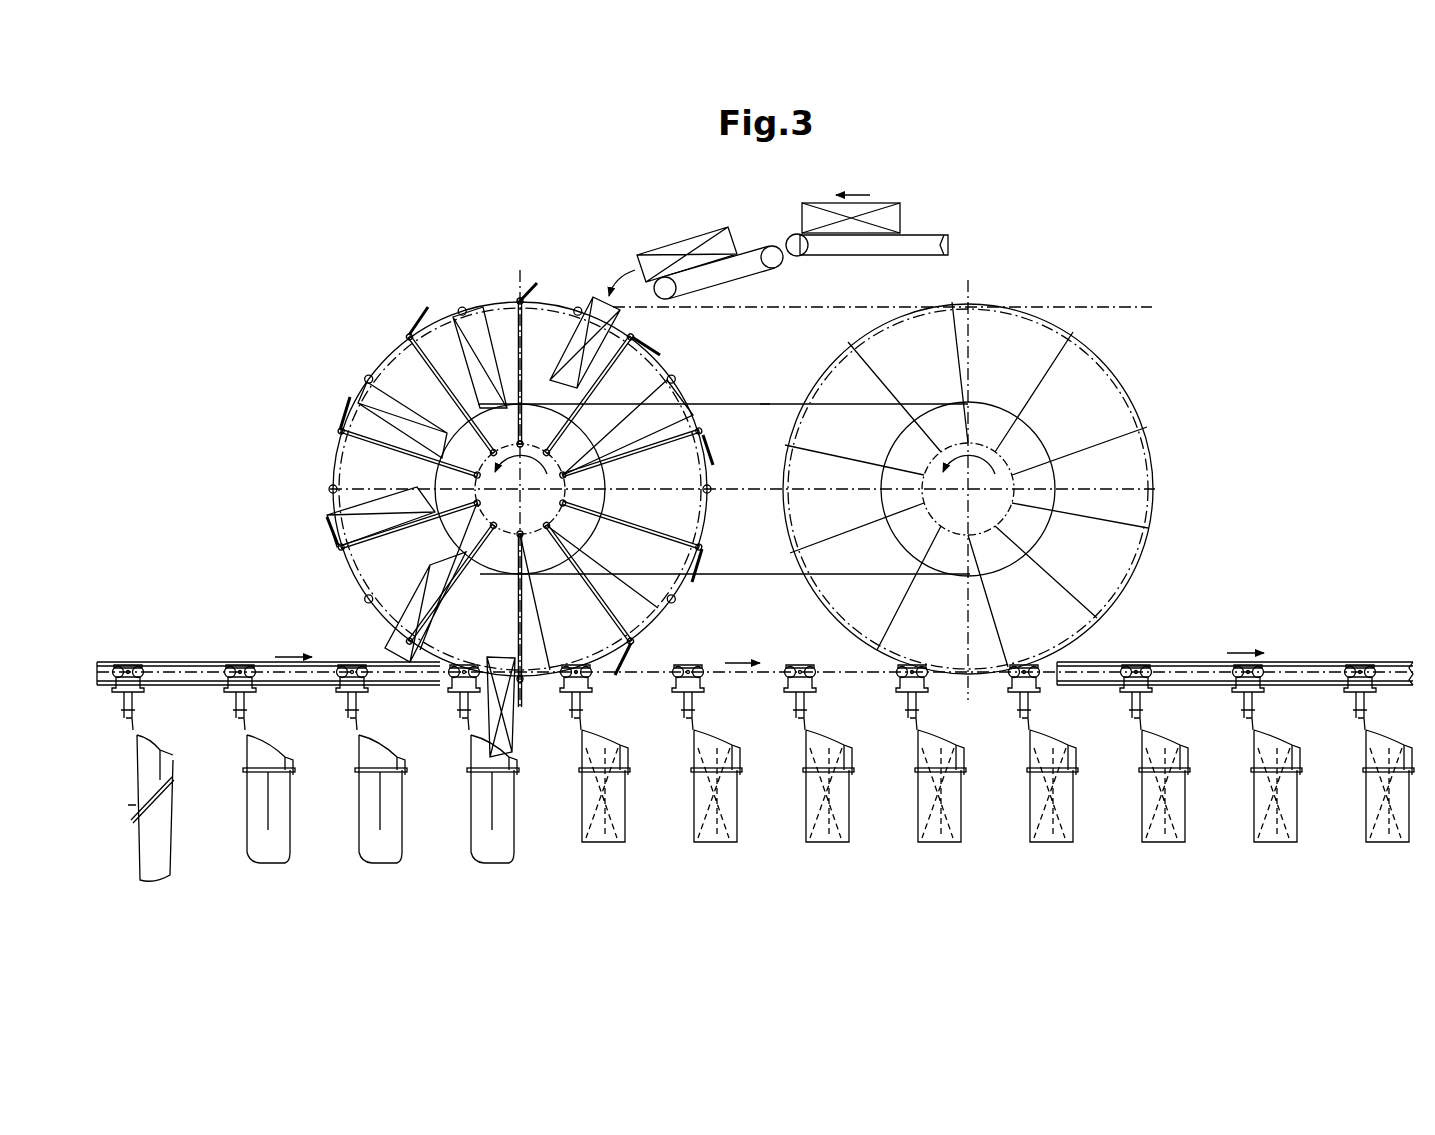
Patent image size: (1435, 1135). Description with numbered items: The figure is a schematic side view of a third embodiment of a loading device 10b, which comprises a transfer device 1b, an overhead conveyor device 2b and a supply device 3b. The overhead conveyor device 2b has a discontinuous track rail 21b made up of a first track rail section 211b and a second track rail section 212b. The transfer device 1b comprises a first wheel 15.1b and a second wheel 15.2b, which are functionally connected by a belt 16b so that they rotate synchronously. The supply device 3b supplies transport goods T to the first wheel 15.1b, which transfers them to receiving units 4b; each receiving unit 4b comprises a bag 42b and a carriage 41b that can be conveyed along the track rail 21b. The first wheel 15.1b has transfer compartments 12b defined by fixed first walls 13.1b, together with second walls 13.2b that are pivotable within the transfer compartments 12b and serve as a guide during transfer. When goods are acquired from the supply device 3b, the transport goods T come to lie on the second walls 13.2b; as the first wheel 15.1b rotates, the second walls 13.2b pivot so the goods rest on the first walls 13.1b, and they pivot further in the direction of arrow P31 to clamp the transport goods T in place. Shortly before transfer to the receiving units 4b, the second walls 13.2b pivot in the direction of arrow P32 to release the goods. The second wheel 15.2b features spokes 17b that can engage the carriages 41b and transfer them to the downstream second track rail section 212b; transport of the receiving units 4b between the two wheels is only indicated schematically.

The transfer device 1b is at (360, 267).
The overhead conveyor device 2b is at (182, 571).
The supply device 3b is at (899, 181).
The receiving unit 4b is at (121, 773).
The loading device 10b is at (1169, 298).
The transfer compartment 12b is at (662, 561).
The first wall 13.1b is at (665, 445).
The second wall 13.2b is at (661, 431).
The first wheel 15.1b is at (366, 329).
The second wheel 15.2b is at (1165, 372).
The belt 16b is at (767, 403).
The spoke 17b is at (1129, 527).
The track rail 21b is at (292, 685).
The carriage 41b is at (141, 683).
The bag 42b is at (166, 868).
The first track rail section 211b is at (270, 661).
The second track rail section 212b is at (1297, 665).
The arrow P31 is at (378, 408).
The arrow P32 is at (449, 625).
The transport goods T is at (682, 245).